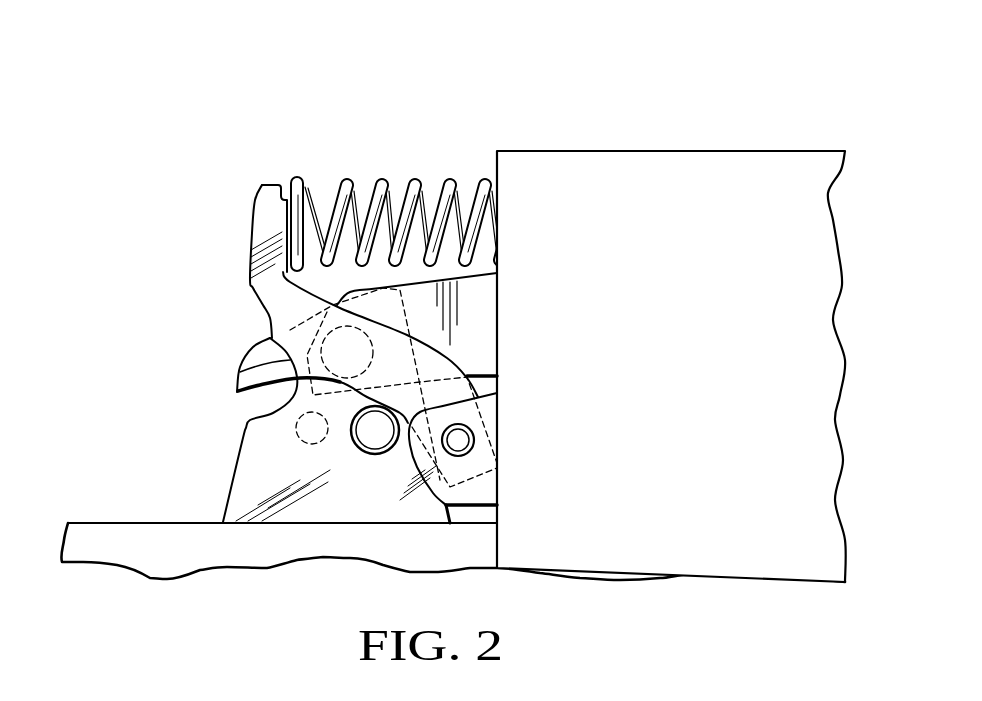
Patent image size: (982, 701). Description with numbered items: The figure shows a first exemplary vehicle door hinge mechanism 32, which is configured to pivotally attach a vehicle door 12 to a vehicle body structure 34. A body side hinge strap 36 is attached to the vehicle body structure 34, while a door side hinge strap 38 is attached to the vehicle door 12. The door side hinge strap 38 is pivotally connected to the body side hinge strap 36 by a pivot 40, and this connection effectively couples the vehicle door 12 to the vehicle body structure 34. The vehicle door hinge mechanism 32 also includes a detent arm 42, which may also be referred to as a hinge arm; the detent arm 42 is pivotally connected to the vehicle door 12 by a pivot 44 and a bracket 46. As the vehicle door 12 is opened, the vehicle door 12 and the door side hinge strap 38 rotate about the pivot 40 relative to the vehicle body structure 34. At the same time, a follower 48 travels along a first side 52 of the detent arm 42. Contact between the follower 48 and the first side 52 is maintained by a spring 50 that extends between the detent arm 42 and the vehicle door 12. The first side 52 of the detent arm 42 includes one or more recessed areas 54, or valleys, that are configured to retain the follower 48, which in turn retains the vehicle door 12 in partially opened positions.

The vehicle door 12 is at (608, 150).
The vehicle door hinge mechanism 32 is at (347, 72).
The vehicle body structure 34 is at (178, 523).
The body side hinge strap 36 is at (310, 497).
The door side hinge strap 38 is at (480, 312).
The pivot 40 is at (290, 330).
The detent arm 42 is at (270, 174).
The pivot 44 is at (477, 437).
The bracket 46 is at (477, 494).
The follower 48 is at (375, 455).
The spring 50 is at (416, 178).
The first side 52 is at (252, 235).
The recessed areas 54 is at (260, 313).